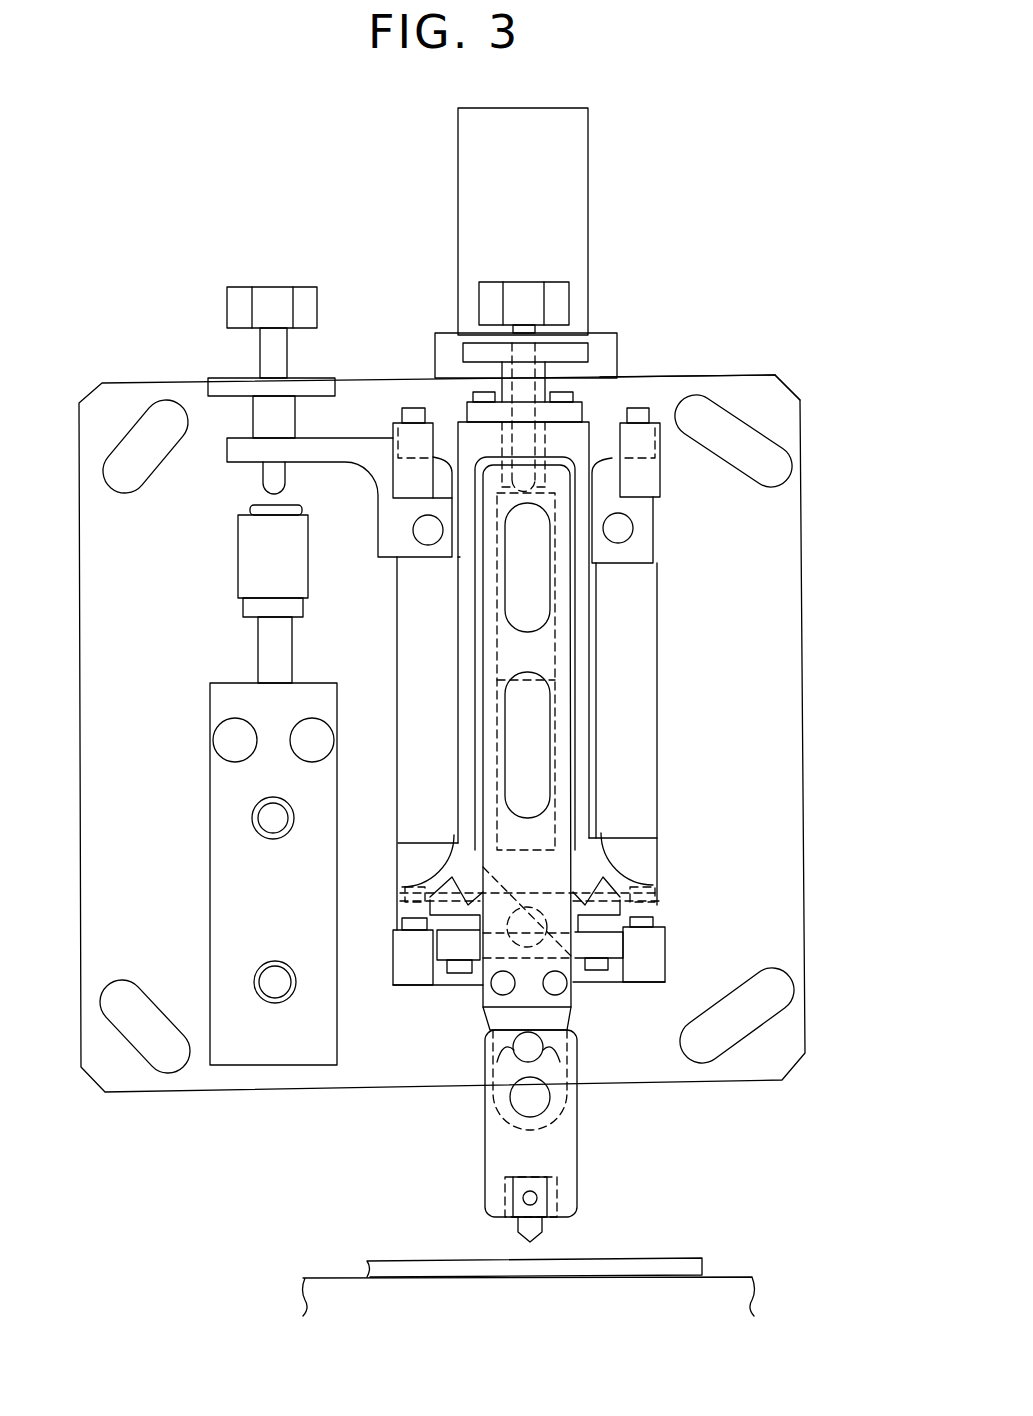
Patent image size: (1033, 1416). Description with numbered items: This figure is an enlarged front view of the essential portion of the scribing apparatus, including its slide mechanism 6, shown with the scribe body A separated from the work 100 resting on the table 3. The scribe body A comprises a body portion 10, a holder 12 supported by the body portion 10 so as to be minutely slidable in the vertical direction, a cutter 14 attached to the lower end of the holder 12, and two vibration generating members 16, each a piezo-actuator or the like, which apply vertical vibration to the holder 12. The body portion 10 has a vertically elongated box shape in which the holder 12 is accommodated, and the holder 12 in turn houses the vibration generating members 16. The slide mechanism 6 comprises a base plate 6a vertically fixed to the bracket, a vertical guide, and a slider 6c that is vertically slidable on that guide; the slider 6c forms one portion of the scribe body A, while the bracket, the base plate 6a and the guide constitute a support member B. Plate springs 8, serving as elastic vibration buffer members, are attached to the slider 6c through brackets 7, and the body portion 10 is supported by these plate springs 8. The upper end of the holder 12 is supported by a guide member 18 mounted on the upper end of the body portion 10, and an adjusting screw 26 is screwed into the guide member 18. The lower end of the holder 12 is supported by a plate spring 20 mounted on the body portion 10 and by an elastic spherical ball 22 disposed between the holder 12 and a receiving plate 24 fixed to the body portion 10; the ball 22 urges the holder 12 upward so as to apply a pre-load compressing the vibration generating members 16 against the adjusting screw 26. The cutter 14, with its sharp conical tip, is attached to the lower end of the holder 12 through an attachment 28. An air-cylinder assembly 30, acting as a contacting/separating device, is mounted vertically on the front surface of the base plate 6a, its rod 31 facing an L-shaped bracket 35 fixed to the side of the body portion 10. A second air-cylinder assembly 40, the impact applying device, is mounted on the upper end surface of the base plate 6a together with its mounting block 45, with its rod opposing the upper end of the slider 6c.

The table 3 is at (738, 1275).
The slide mechanism 6 is at (802, 562).
The base plate 6a is at (692, 375).
The slider 6c is at (657, 688).
The brackets 7 is at (648, 477).
The plate springs 8 is at (638, 407).
The body portion 10 is at (597, 728).
The holder 12 is at (577, 822).
The cutter 14 is at (542, 1231).
The vibration generating members 16 is at (555, 650).
The guide member 18 is at (502, 445).
The plate spring 20 is at (600, 880).
The ball 22 is at (573, 867).
The receiving plate 24 is at (592, 948).
The adjusting screw 26 is at (523, 282).
The attachment 28 is at (563, 1147).
The air-cylinder assembly 30 is at (210, 797).
The rod 31 is at (270, 640).
The L-shaped bracket 35 is at (341, 446).
The air-cylinder assembly 40 is at (575, 203).
The mounting block 45 is at (607, 330).
The workpiece 100 is at (673, 1258).
The scribe body A is at (600, 603).
The support member B is at (733, 375).